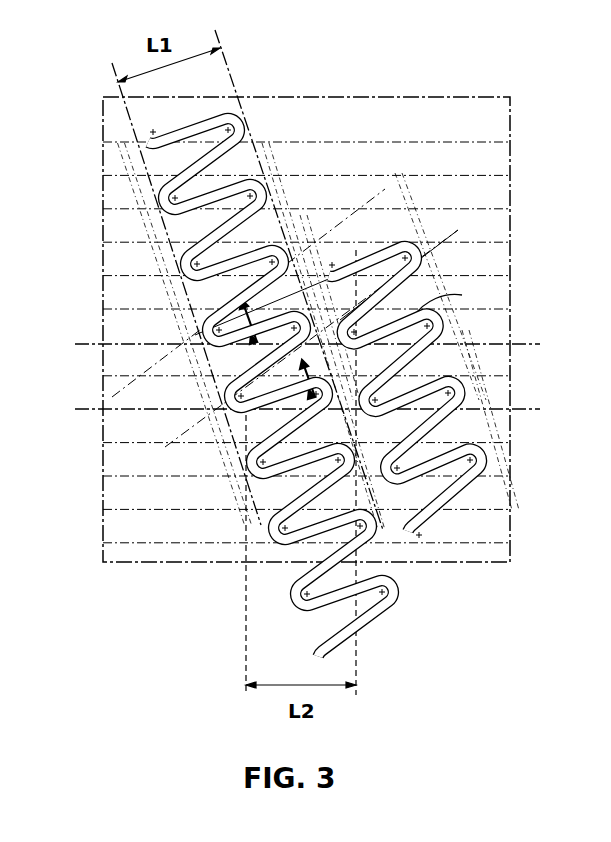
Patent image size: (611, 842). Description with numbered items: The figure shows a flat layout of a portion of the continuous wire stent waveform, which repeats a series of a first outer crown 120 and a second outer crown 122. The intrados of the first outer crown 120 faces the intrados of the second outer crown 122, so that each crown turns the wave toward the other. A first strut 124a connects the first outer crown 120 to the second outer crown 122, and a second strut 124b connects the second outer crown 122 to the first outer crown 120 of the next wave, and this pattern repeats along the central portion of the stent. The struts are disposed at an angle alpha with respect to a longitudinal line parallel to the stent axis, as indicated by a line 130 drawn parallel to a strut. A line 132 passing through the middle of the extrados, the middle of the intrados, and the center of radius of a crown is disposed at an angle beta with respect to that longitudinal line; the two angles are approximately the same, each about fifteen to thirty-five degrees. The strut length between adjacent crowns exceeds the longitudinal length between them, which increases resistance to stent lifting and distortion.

The first outer crown 120 is at (249, 360).
The second outer crown 122 is at (258, 180).
The first strut 124a is at (228, 173).
The second strut 124b is at (228, 228).
The line 130 is at (345, 220).
The line 132 is at (432, 268).